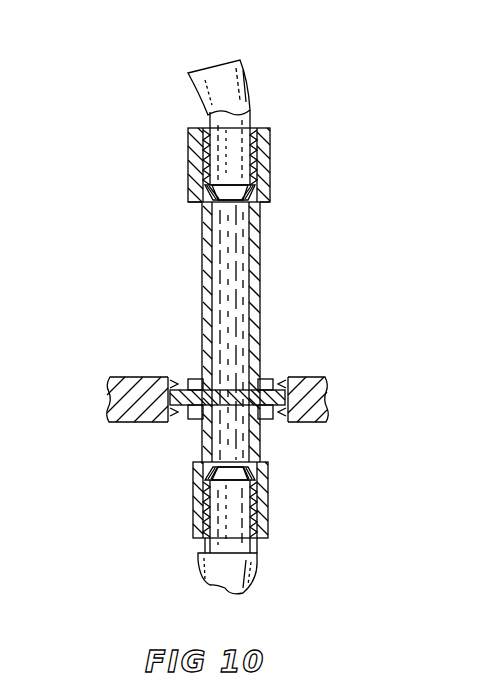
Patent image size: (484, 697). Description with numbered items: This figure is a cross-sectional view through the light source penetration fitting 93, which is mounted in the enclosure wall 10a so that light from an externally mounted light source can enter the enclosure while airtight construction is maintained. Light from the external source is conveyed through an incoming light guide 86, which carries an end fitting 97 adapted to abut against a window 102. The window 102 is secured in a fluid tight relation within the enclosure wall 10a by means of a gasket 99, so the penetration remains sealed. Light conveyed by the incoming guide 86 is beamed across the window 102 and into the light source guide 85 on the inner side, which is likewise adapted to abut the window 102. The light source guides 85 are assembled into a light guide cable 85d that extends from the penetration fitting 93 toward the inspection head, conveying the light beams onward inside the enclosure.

The incoming light guide 86 is at (238, 62).
The end fitting 97 is at (265, 128).
The light source penetration fitting 93 is at (170, 257).
The window 102 is at (202, 392).
The gasket 99 is at (287, 383).
The enclosure wall 10a is at (332, 400).
The light source guide 85 is at (192, 568).
The light guide cable 85d is at (238, 575).